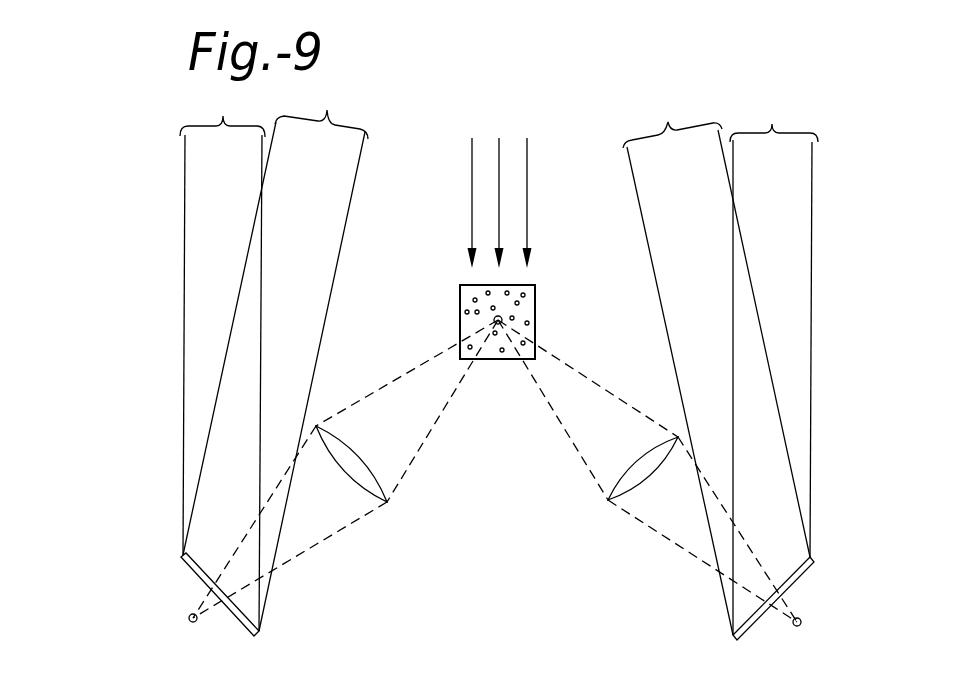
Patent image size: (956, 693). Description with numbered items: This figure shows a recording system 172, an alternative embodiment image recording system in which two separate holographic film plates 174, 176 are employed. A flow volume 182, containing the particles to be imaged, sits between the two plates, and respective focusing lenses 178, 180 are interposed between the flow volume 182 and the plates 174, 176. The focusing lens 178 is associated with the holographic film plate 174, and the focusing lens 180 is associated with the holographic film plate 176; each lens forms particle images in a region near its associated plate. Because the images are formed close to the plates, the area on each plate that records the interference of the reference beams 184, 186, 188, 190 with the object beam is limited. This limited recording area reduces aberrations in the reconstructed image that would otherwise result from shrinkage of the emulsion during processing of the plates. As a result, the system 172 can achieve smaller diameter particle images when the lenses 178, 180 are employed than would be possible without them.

The recording system 172 is at (160, 180).
The holographic film plate 174 is at (242, 628).
The holographic film plate 176 is at (745, 633).
The focusing lens 178 is at (348, 447).
The focusing lens 180 is at (613, 488).
The flow volume 182 is at (535, 320).
The reference beam 184 is at (223, 115).
The reference beam 186 is at (327, 110).
The reference beam 188 is at (669, 121).
The reference beam 190 is at (772, 128).